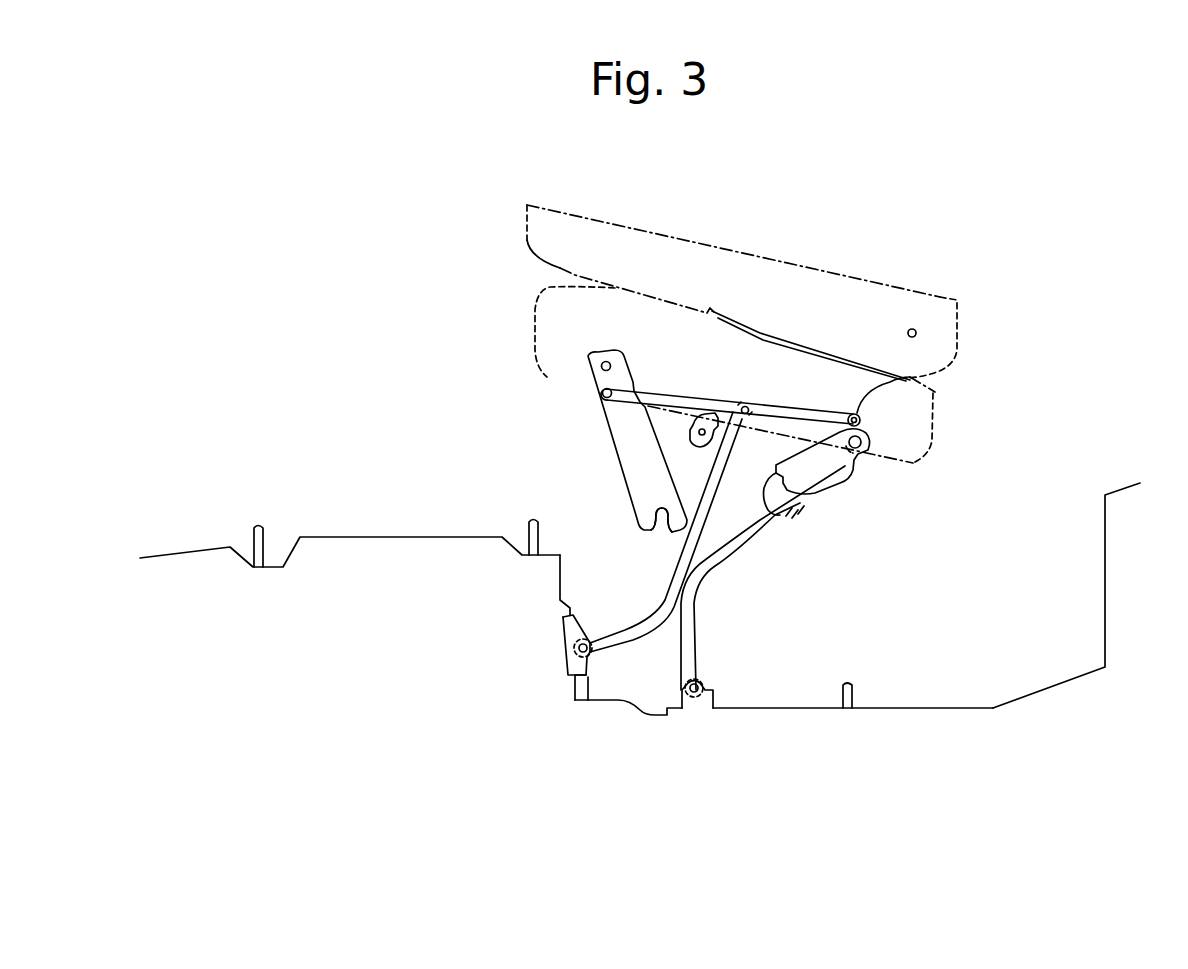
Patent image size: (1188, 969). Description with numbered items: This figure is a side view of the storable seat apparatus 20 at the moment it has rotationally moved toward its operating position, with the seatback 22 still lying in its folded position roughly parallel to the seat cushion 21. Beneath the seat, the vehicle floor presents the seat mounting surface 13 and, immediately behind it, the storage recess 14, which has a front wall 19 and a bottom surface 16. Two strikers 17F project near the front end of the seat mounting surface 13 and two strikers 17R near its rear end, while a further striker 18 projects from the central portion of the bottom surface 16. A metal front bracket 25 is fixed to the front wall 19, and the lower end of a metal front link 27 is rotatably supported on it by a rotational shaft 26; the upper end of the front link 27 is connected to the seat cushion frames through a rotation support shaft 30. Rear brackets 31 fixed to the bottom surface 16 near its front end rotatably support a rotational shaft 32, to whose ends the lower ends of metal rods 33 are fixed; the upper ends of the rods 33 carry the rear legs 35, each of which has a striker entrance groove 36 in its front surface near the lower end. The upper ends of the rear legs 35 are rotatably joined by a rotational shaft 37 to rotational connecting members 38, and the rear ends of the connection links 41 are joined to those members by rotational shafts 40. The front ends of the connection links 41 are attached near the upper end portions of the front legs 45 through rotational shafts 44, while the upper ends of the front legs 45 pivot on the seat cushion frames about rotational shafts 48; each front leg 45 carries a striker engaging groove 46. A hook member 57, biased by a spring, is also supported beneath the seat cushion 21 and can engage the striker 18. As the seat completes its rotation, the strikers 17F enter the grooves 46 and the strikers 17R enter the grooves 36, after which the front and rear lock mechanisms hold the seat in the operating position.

The seat mounting surface 13 is at (365, 535).
The storage recess 14 is at (1103, 570).
The bottom surface 16 is at (918, 708).
The strikers 17F is at (255, 527).
The strikers 17R is at (528, 520).
The striker 18 is at (852, 685).
The front wall 19 is at (563, 582).
The storable seat apparatus 20 is at (1097, 268).
The seat cushion 21 is at (937, 392).
The seatback 22 is at (940, 297).
The front bracket 25 is at (590, 675).
The rotational shaft 26 is at (577, 652).
The front link 27 is at (625, 638).
The rotation support shaft 30 is at (748, 408).
The rear brackets 31 is at (713, 697).
The rotational shaft 32 is at (697, 690).
The rods 33 is at (752, 542).
The rear legs 35 is at (825, 474).
The striker entrance groove 36 is at (817, 489).
The rotational shaft 37 is at (866, 447).
The rotational connecting members 38 is at (866, 421).
The rotational shafts 40 is at (910, 377).
The connection links 41 is at (665, 398).
The rotational shafts 44 is at (601, 398).
The front legs 45 is at (620, 450).
The striker engaging grooves 46 is at (658, 533).
The rotational shafts 48 is at (601, 368).
The hook member 57 is at (693, 448).